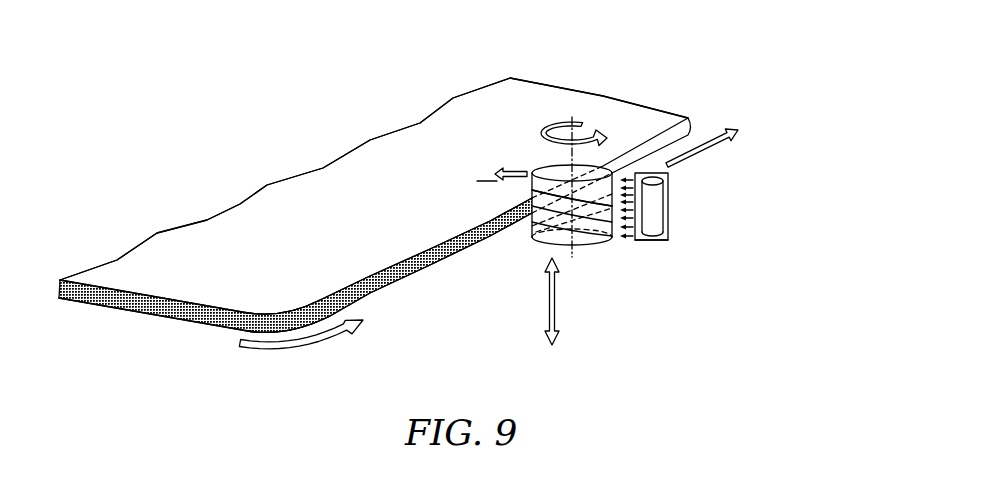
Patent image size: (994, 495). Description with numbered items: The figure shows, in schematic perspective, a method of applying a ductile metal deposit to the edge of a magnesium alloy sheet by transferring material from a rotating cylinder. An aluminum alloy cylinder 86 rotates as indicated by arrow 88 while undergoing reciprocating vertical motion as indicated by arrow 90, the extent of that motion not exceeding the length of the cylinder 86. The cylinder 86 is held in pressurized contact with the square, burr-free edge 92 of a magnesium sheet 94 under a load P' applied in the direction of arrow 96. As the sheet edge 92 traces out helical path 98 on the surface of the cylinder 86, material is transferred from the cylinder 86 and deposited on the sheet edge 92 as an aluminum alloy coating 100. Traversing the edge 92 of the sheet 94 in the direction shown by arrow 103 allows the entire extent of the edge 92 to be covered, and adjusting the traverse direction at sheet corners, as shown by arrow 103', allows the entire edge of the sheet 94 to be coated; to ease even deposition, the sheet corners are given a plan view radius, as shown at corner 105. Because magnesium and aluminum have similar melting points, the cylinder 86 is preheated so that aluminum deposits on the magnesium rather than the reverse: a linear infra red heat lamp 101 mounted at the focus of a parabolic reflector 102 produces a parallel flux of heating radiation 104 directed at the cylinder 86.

The aluminum alloy cylinder 86 is at (605, 242).
The arrow 88 is at (587, 129).
The arrow 90 is at (545, 313).
The square, burr-free edge 92 is at (637, 160).
The magnesium sheet 94 is at (371, 182).
The arrow 96 is at (513, 167).
The helical path 98 is at (547, 225).
The aluminum alloy coating 100 is at (190, 313).
The linear infra red heat lamp 101 is at (648, 161).
The parabolic reflector 102 is at (670, 223).
The arrow 103 is at (734, 137).
The arrow 103' is at (301, 373).
The heating radiation 104 is at (630, 243).
The corner 105 is at (288, 311).